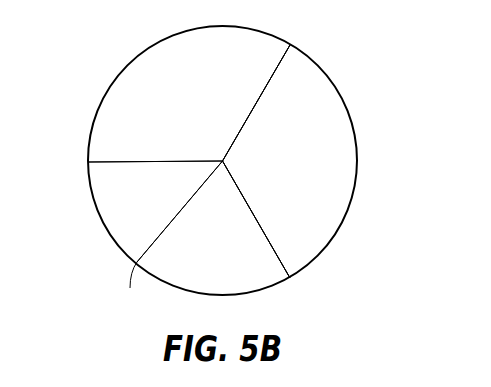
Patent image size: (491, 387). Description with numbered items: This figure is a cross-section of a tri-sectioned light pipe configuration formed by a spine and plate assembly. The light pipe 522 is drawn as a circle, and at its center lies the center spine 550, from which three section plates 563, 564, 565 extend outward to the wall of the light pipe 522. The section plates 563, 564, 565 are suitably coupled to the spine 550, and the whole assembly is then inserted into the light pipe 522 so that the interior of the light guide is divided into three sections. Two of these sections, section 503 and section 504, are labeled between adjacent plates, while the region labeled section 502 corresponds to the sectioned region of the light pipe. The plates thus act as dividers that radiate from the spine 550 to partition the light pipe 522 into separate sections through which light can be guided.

The section 502 is at (150, 88).
The section 503 is at (243, 274).
The section 504 is at (325, 162).
The light pipe 522 is at (343, 219).
The center spine 550 is at (166, 236).
The section plate 563 is at (117, 162).
The section plate 564 is at (260, 97).
The section plate 565 is at (263, 235).